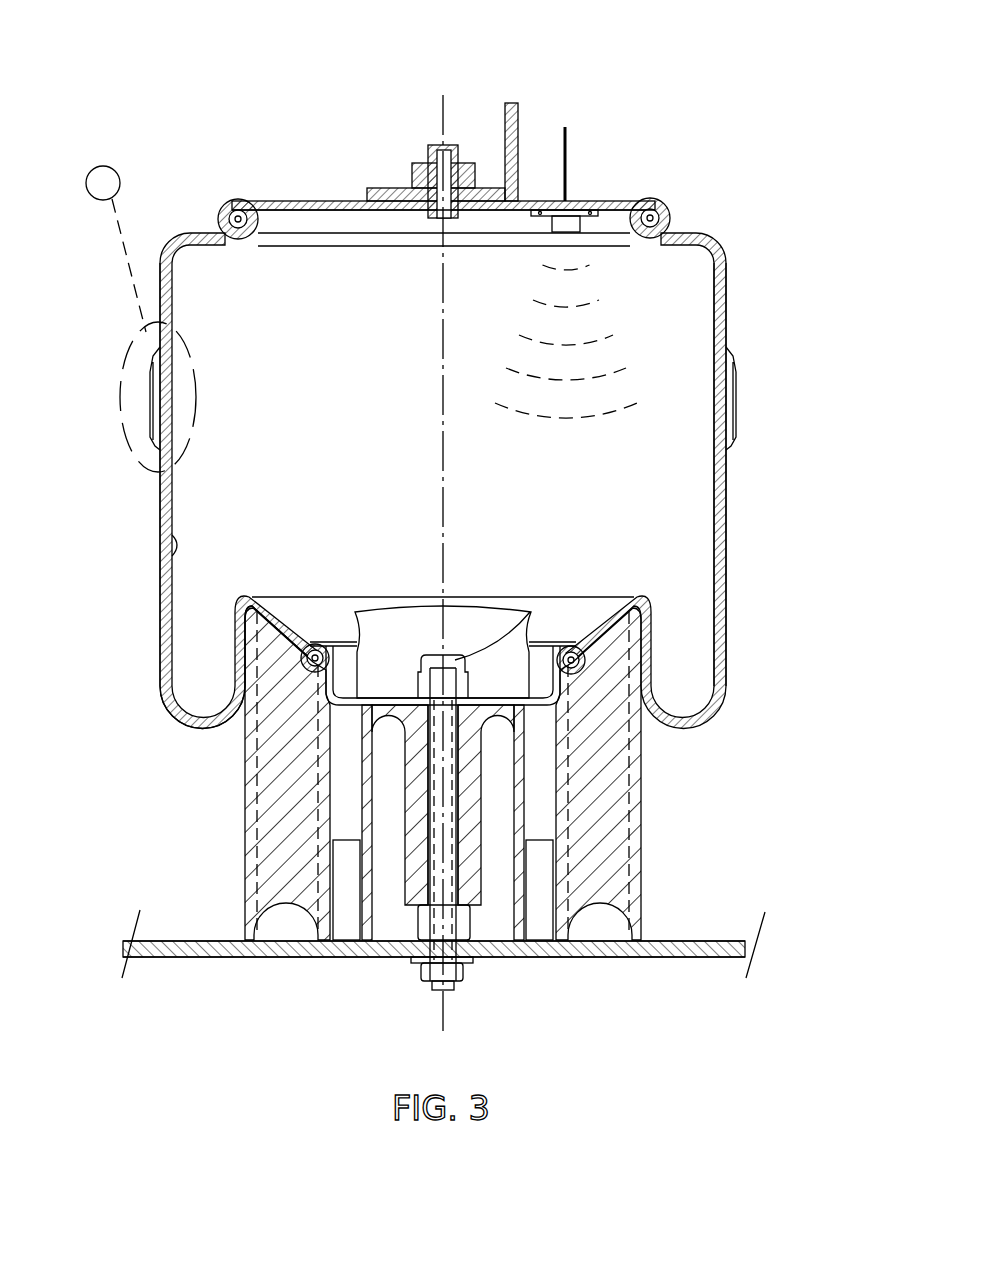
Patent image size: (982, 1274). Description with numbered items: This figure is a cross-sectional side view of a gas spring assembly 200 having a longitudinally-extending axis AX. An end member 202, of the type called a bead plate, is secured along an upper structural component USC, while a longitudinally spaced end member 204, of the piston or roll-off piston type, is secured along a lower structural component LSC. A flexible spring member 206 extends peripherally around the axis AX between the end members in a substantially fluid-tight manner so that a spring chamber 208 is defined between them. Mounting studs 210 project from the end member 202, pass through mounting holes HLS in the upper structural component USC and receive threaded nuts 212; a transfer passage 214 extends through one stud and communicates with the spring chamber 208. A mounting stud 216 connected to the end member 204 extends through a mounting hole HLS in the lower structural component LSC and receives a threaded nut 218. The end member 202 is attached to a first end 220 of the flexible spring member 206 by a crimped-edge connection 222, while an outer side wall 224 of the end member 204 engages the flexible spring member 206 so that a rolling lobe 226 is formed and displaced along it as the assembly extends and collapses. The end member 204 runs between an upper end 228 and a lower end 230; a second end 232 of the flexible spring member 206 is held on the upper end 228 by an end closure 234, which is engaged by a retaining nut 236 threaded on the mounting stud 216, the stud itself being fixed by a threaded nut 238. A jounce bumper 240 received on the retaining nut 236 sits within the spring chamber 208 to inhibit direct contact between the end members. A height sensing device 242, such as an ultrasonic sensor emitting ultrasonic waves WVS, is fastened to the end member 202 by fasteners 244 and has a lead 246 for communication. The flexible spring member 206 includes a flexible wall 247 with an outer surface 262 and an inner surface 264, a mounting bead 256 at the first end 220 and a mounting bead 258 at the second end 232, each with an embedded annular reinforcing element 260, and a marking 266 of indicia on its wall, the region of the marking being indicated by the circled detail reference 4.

The gas spring assembly 200 is at (752, 236).
The end member 202 is at (313, 198).
The end member 204 is at (657, 796).
The flexible spring member 206 is at (733, 553).
The spring chamber 208 is at (679, 331).
The mounting stud 210 is at (458, 160).
The threaded nut 212 is at (412, 172).
The transfer passage 214 is at (437, 143).
The mounting stud 216 is at (455, 982).
The threaded nut 218 is at (472, 967).
The first end 220 is at (279, 241).
The crimped-edge connection 222 is at (670, 218).
The outer side wall 224 is at (243, 808).
The rolling lobe 226 is at (203, 733).
The upper end 228 is at (238, 625).
The lower end 230 is at (220, 910).
The second end 232 is at (294, 596).
The end closure 234 is at (548, 640).
The retaining nut 236 is at (462, 662).
The threaded nut 238 is at (470, 912).
The jounce bumper 240 is at (468, 622).
The height sensing device 242 is at (598, 236).
The fasteners 244 is at (535, 236).
The lead 246 is at (567, 152).
The flexible wall 247 is at (732, 510).
The mounting bead 256 is at (243, 199).
The mounting bead 258 is at (315, 654).
The annular reinforcing element 260 is at (653, 212).
The outer surface 262 is at (163, 492).
The inner surface 264 is at (172, 542).
The marking 266 is at (141, 358).
The detail view reference 4 is at (141, 319).
The longitudinally-extending axis AX is at (440, 405).
The upper structural component USC is at (513, 122).
The lower structural component LSC is at (188, 958).
The mounting holes HLS is at (400, 208).
The ultrasonic waves WVS is at (600, 396).